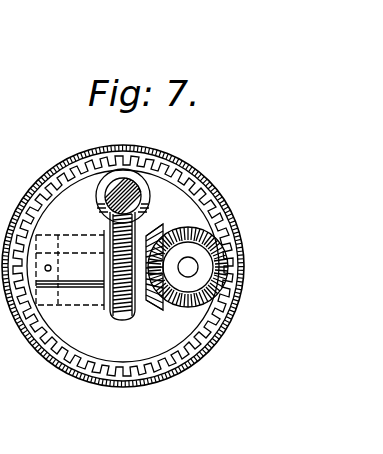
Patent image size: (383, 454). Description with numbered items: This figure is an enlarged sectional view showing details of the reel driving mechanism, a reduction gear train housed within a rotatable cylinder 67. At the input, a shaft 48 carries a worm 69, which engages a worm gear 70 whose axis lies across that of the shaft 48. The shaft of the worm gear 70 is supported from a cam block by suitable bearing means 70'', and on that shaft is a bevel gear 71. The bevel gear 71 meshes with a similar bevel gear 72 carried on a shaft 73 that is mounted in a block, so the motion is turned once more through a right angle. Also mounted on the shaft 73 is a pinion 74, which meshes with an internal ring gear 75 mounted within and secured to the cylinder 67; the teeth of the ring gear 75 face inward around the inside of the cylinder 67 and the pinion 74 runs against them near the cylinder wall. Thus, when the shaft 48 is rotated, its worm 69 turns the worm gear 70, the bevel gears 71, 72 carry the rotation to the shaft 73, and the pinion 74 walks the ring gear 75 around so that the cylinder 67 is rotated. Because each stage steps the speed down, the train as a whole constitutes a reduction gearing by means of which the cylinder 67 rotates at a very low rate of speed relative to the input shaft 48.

The cylinder 67 is at (62, 166).
The pinion 74 is at (210, 217).
The shaft 48 is at (105, 197).
The worm 69 is at (143, 192).
The worm gear 70 is at (102, 284).
The bearing means 70'' is at (98, 293).
The internal ring gear 75 is at (33, 229).
The bevel gear 71 is at (157, 303).
The bevel gear 72 is at (180, 302).
The shaft 73 is at (188, 267).